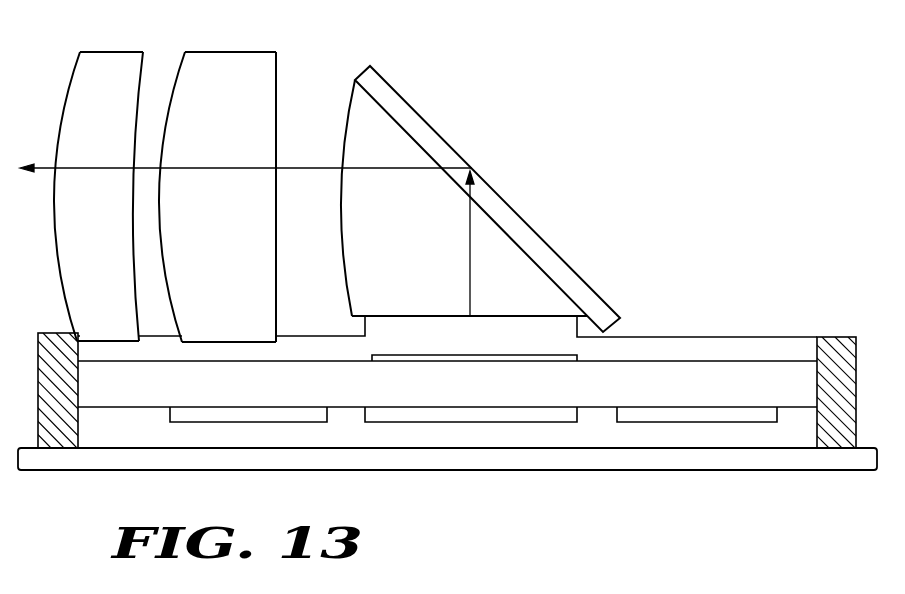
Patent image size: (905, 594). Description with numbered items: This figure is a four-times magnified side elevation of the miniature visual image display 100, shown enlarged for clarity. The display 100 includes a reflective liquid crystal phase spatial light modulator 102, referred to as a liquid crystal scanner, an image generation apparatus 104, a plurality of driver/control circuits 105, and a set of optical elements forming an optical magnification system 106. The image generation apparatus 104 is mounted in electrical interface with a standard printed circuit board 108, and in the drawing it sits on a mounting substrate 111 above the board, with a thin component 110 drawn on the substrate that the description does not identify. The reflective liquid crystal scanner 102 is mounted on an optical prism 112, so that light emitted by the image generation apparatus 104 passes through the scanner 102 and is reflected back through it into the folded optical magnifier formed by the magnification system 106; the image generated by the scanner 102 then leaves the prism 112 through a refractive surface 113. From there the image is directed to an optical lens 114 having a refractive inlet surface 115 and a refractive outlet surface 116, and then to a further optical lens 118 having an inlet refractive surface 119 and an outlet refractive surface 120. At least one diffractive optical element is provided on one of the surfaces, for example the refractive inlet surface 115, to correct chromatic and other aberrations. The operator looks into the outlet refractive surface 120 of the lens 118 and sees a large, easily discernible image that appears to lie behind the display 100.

The miniature visual image display 100 is at (473, 540).
The reflective liquid crystal phase spatial light modulator 102 is at (508, 212).
The image generation apparatus 104 is at (522, 413).
The driver/control circuits 105 is at (187, 422).
The optical magnification system 106 is at (459, 83).
The printed circuit board 108 is at (643, 468).
The spacer 110 is at (418, 358).
The mounting substrate 111 is at (268, 393).
The optical prism 112 is at (447, 198).
The refractive surface 113 is at (348, 127).
The optical lens 114 is at (247, 174).
The refractive inlet surface 115 is at (277, 70).
The refractive outlet surface 116 is at (178, 72).
The optical lens 118 is at (97, 172).
The inlet refractive surface 119 is at (142, 66).
The outlet refractive surface 120 is at (76, 66).